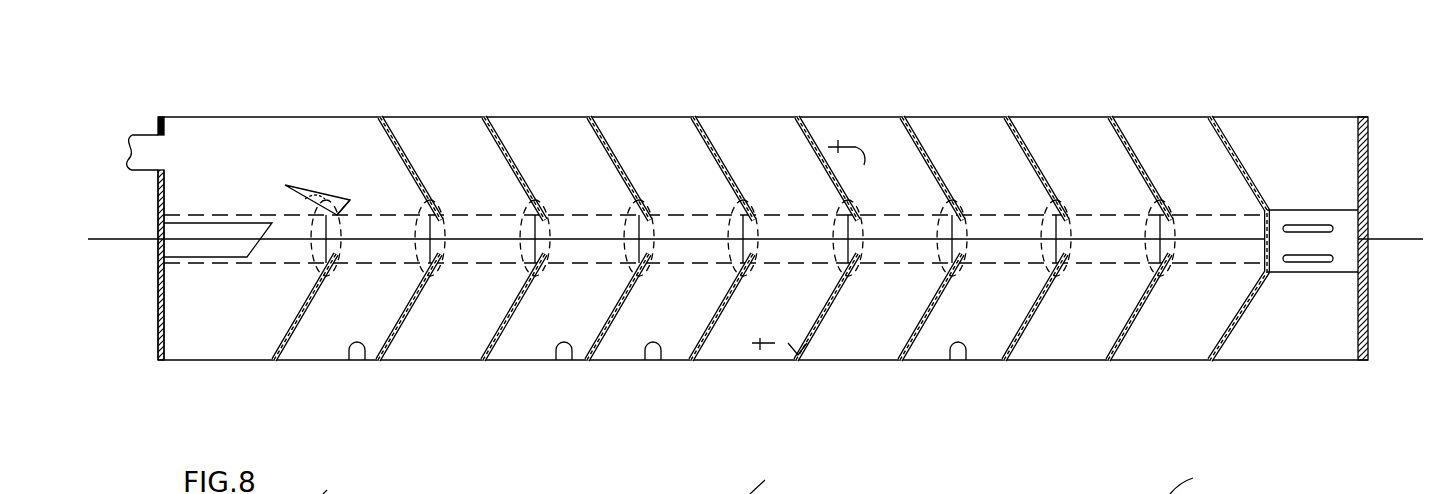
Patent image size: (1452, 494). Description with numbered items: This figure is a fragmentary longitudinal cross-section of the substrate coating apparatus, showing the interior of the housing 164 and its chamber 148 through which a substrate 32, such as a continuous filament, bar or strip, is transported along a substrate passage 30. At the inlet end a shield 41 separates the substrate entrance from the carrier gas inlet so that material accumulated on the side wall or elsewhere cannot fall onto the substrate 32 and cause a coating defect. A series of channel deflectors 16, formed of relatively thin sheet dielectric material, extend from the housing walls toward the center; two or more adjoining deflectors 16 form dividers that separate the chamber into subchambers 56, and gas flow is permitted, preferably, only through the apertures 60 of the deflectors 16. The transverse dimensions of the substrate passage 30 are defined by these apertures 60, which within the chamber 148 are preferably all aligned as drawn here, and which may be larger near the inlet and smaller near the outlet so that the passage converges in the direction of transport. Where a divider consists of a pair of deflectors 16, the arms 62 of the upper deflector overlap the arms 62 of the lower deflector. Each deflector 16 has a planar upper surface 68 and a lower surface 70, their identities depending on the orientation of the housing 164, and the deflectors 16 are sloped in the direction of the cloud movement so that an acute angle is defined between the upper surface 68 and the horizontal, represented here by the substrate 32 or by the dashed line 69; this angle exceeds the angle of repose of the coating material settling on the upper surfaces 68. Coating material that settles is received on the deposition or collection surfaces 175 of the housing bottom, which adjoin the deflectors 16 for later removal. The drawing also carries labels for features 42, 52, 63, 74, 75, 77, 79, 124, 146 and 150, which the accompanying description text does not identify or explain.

The deflector 16 is at (302, 330).
The substrate passage 30 is at (552, 216).
The substrate 32 is at (120, 241).
The shield 41 is at (214, 222).
The inlet end wall 42 is at (152, 358).
The end member 52 is at (1240, 330).
The subchamber 56 is at (292, 162).
The aperture 60 is at (775, 476).
The arm 62 is at (1265, 493).
The interior space 63 is at (187, 330).
The upper surface 68 is at (395, 143).
The dashed line 69 is at (840, 140).
The lower surface 70 is at (710, 370).
The blade tip 74 is at (1165, 212).
The axis line 75 is at (110, 238).
The arrow 77 is at (333, 195).
The arrow 79 is at (325, 197).
The inlet 124 is at (147, 130).
The outlet end wall 146 is at (1368, 330).
The chamber 148 is at (186, 130).
The opening 150 is at (550, 230).
The housing 164 is at (765, 125).
The deposition or collection surface 175 is at (349, 360).